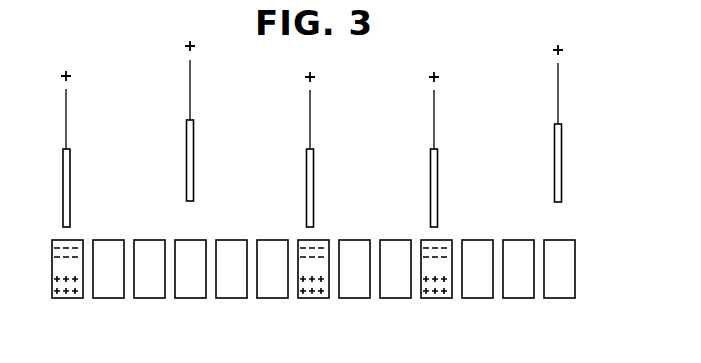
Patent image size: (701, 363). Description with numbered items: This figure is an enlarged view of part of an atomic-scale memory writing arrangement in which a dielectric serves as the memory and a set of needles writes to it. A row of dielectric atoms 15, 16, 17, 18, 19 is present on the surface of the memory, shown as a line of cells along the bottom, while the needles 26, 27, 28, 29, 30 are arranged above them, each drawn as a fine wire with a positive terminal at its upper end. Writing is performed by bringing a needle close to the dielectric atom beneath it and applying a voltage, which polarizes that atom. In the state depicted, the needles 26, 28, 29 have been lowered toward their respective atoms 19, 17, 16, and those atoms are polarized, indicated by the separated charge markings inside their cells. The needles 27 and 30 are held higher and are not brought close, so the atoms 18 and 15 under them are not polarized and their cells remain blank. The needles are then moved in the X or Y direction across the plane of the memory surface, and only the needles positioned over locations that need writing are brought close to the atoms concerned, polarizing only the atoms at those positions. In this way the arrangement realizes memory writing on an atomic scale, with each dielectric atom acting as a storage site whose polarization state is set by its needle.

The dielectric atom 15 is at (560, 298).
The dielectric atom 16 is at (434, 298).
The dielectric atom 17 is at (313, 298).
The dielectric atom 18 is at (191, 298).
The dielectric atom 19 is at (75, 298).
The needle 26 is at (70, 186).
The needle 27 is at (194, 141).
The needle 28 is at (314, 185).
The needle 29 is at (438, 185).
The needle 30 is at (562, 141).